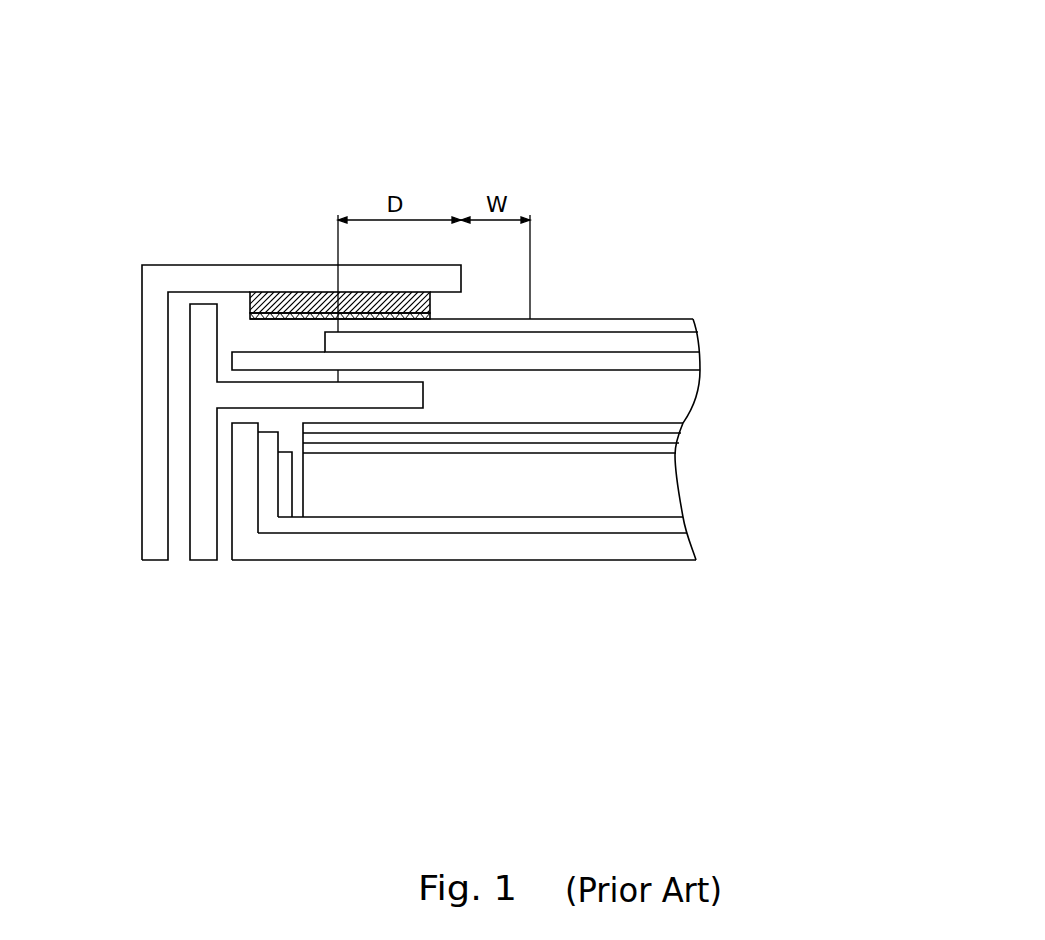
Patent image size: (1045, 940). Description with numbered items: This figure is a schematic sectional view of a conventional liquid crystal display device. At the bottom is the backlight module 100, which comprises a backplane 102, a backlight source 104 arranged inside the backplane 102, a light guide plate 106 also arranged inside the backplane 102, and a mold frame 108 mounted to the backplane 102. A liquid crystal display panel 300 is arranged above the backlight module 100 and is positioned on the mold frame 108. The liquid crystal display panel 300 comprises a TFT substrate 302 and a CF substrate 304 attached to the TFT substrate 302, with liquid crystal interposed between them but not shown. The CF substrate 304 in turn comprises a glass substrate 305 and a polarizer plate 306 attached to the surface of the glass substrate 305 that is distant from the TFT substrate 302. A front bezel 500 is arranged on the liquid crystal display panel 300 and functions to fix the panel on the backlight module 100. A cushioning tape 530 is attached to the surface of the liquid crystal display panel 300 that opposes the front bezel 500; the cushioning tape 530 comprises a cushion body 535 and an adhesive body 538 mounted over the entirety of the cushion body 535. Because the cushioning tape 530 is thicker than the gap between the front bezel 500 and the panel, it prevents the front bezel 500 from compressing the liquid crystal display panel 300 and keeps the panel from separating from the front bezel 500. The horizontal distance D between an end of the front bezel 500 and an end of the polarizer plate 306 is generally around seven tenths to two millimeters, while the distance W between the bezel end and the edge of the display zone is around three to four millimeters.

The backlight module 100 is at (443, 515).
The backplane 102 is at (464, 595).
The backlight source 104 is at (282, 487).
The light guide plate 106 is at (428, 487).
The mold frame 108 is at (200, 535).
The liquid crystal display panel 300 is at (584, 342).
The TFT substrate 302 is at (628, 361).
The CF substrate 304 is at (496, 238).
The glass substrate 305 is at (512, 269).
The polarizer plate 306 is at (675, 322).
The front bezel 500 is at (155, 342).
The cushioning tape 530 is at (314, 168).
The cushion body 535 is at (300, 300).
The adhesive body 538 is at (265, 310).